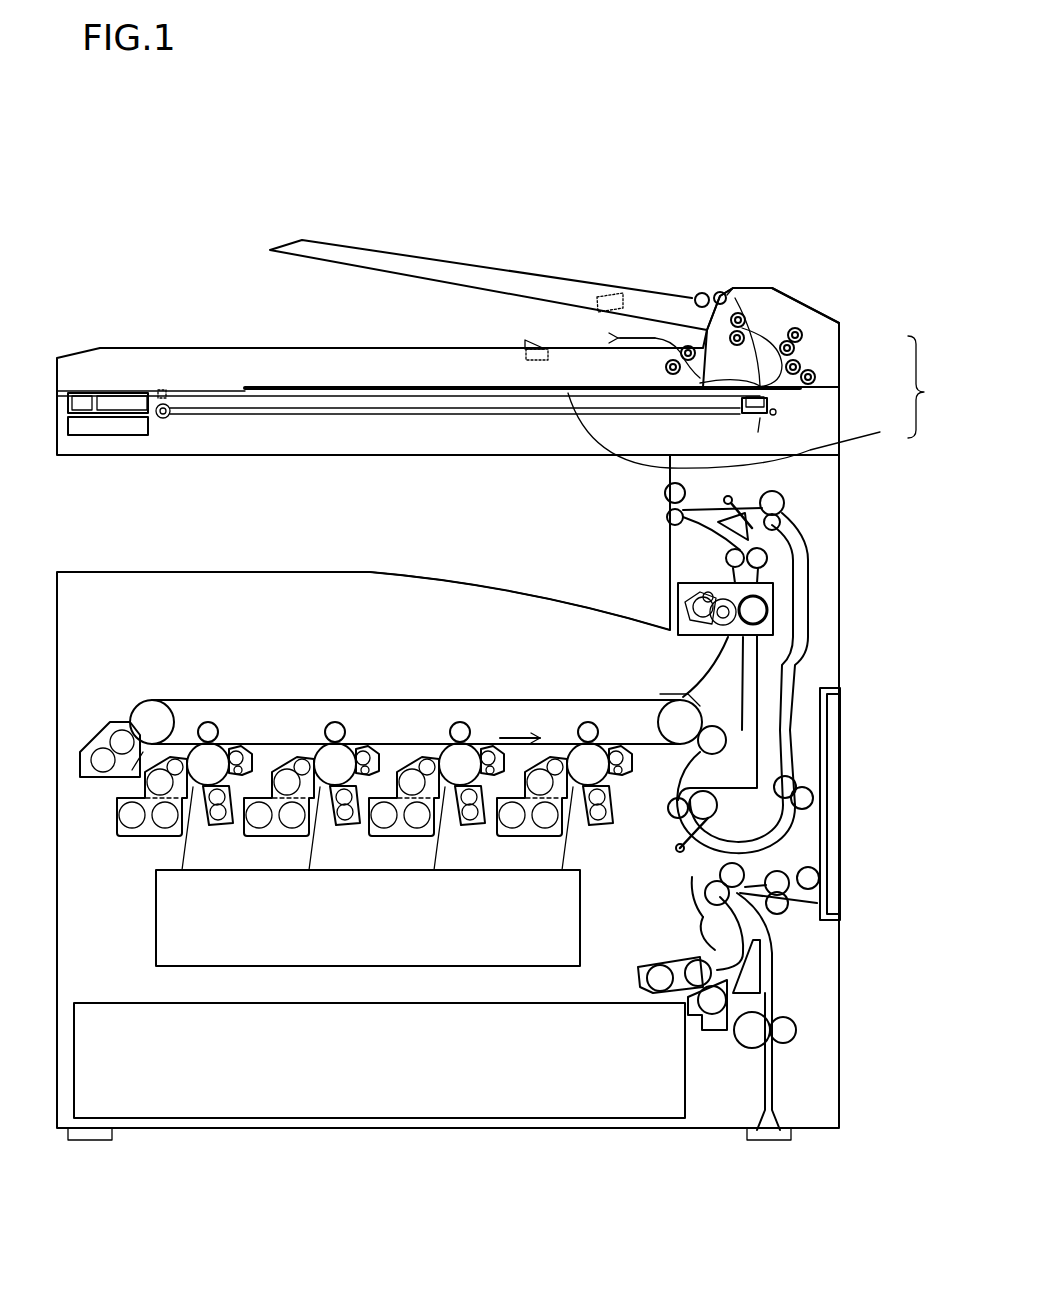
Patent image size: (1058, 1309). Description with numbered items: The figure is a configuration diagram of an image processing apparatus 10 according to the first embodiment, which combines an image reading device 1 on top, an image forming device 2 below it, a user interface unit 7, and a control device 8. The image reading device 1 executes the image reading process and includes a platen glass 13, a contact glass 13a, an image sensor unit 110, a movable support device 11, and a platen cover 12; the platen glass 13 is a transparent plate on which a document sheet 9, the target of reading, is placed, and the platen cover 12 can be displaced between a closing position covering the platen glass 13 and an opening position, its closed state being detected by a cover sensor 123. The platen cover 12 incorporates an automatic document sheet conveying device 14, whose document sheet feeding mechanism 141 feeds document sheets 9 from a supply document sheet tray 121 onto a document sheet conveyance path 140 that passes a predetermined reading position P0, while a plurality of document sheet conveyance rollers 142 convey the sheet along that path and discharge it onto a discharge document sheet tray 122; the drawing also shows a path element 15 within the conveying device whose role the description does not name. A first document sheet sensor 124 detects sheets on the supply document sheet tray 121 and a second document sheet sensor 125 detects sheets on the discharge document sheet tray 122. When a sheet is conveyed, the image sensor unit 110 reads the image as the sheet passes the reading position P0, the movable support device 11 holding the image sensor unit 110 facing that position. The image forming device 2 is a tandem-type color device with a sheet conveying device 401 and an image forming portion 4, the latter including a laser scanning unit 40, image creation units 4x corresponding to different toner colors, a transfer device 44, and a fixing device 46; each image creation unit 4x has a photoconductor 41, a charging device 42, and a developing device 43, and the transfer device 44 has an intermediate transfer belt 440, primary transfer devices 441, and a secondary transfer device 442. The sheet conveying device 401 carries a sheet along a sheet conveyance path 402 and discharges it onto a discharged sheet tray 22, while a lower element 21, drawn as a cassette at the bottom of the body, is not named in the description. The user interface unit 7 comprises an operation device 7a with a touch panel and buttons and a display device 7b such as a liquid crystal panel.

The image reading device 1 is at (924, 387).
The image forming device 2 is at (78, 568).
The image forming portion 4 is at (462, 769).
The image creation units 4x is at (190, 736).
The user interface unit 7 is at (67, 403).
The operation device 7a is at (82, 395).
The display device 7b is at (120, 394).
The control device 8 is at (68, 426).
The document sheet 9 is at (355, 386).
The image processing apparatus 10 is at (125, 257).
The movable support device 11 is at (782, 410).
The platen cover 12 is at (843, 369).
The platen glass 13 is at (740, 430).
The contact glass 13a is at (846, 350).
The automatic document sheet conveying device 14 is at (805, 347).
The document conveyance path 15 is at (760, 385).
The sheet feeding cassette 21 is at (74, 1093).
The discharged sheet tray 22 is at (440, 572).
The laser scanning unit 40 is at (583, 928).
The photoconductor 41 is at (233, 790).
The charging device 42 is at (217, 830).
The developing device 43 is at (148, 838).
The transfer device 44 is at (123, 712).
The fixing device 46 is at (775, 595).
The image sensor unit 110 is at (763, 436).
The supply document sheet tray 121 is at (462, 264).
The discharge document sheet tray 122 is at (412, 348).
The cover sensor 123 is at (160, 390).
The first document sheet sensor 124 is at (603, 295).
The second document sheet sensor 125 is at (523, 340).
The document sheet conveyance path 140 is at (835, 340).
The document sheet feeding mechanism 141 is at (700, 292).
The document sheet conveyance rollers 142 is at (738, 313).
The sheet conveying device 401 is at (797, 1000).
The sheet conveyance path 402 is at (708, 866).
The intermediate transfer belt 440 is at (470, 700).
The primary transfer devices 441 is at (212, 722).
The secondary transfer device 442 is at (727, 737).
The reading position P0 is at (700, 383).